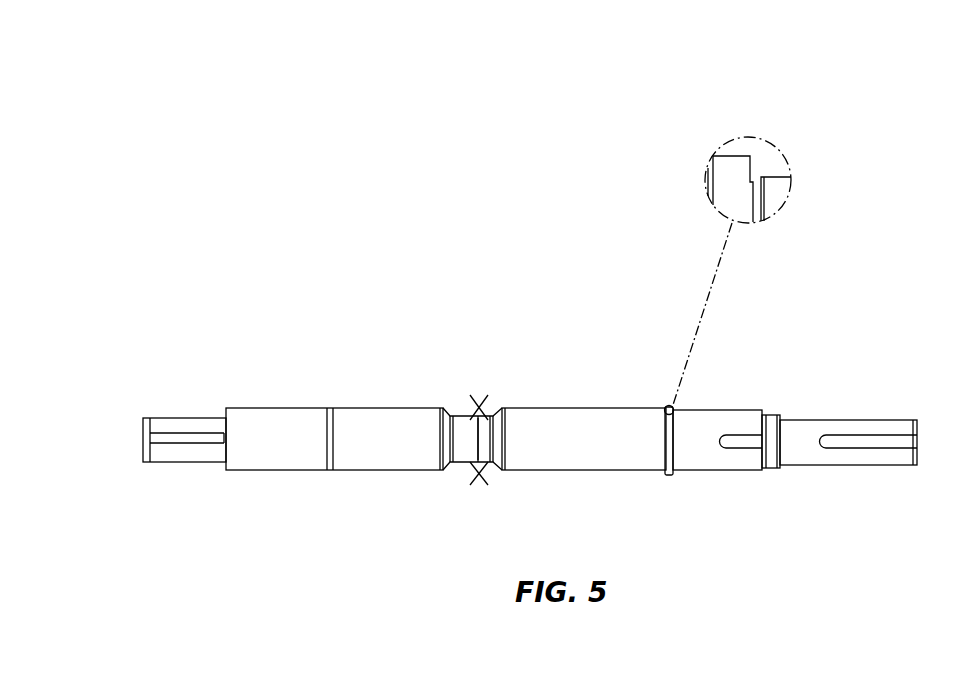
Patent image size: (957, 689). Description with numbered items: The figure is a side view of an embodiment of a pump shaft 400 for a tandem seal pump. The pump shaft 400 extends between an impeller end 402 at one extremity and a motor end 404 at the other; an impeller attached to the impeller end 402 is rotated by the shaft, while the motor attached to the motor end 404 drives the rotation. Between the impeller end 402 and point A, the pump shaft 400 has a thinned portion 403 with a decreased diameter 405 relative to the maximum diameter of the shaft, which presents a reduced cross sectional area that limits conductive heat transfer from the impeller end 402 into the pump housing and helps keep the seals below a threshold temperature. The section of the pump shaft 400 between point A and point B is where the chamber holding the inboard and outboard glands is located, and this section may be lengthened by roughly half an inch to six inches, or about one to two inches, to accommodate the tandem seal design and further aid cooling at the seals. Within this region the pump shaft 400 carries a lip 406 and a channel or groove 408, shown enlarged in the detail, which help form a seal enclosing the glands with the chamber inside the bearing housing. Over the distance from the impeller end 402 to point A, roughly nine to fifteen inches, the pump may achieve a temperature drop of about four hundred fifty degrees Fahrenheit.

The pump shaft 400 is at (617, 332).
The impeller end 402 is at (178, 432).
The portion having a decreased diameter 403 is at (463, 425).
The motor end 404 is at (888, 430).
The decreased diameter 405 is at (477, 455).
The lip 406 is at (668, 405).
The channel or groove 408 is at (753, 177).
The point A is at (552, 473).
The point B is at (683, 473).